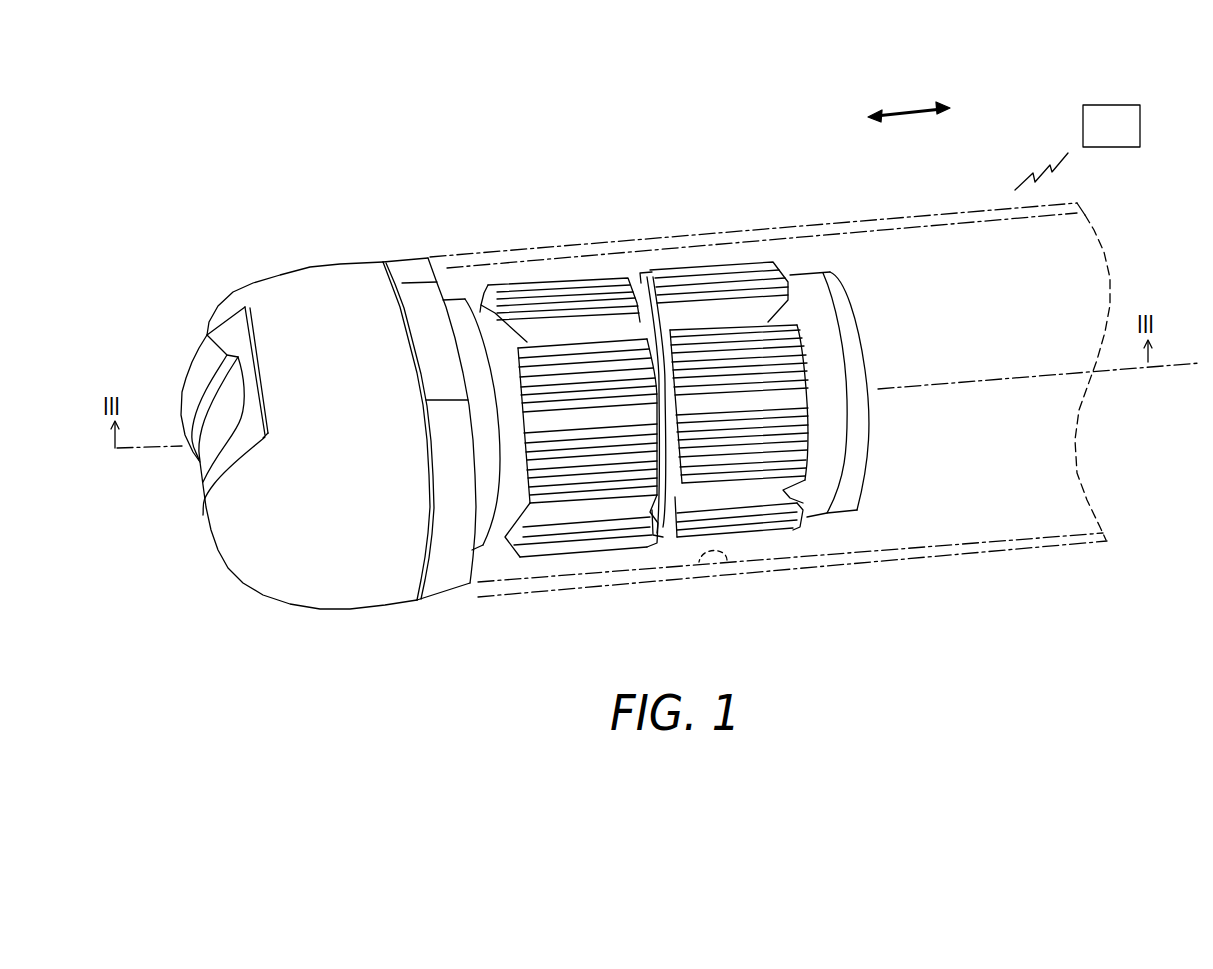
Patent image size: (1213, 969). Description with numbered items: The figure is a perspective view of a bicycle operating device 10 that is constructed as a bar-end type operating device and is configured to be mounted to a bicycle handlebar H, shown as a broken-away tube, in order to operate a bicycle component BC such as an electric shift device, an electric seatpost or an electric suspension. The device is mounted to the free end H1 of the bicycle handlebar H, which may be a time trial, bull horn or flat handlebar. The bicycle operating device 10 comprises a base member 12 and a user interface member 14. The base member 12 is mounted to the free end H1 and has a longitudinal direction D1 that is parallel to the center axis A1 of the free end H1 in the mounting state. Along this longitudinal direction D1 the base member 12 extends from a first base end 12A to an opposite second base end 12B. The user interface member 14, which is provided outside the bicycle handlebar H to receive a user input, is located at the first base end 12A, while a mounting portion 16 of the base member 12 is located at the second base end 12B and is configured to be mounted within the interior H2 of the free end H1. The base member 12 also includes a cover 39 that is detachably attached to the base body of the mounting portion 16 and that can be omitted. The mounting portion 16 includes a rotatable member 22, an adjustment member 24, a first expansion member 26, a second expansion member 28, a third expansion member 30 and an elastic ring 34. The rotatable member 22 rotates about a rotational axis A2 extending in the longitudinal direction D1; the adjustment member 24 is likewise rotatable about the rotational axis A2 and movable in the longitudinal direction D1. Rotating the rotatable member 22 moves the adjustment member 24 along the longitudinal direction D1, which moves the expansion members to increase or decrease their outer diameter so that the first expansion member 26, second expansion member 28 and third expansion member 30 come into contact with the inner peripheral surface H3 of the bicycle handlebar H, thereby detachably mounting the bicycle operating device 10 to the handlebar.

The bicycle operating device 10 is at (268, 192).
The base member 12 is at (633, 157).
The first base end 12A is at (217, 571).
The second base end 12B is at (847, 520).
The user interface member 14 is at (194, 498).
The mounting portion 16 is at (833, 182).
The rotatable member 22 is at (403, 257).
The adjustment member 24 is at (792, 265).
The first expansion member 26 is at (597, 337).
The second expansion member 28 is at (567, 275).
The third expansion member 30 is at (565, 558).
The elastic ring 34 is at (642, 279).
The cover 39 is at (323, 263).
The bicycle handlebar H is at (1073, 547).
The free end H1 is at (615, 587).
The interior H2 is at (975, 471).
The inner peripheral surface H3 is at (727, 560).
The longitudinal direction D1 is at (912, 108).
The bicycle component BC is at (1123, 140).
The center axis A1 is at (1170, 318).
The rotational axis A2 is at (1187, 360).